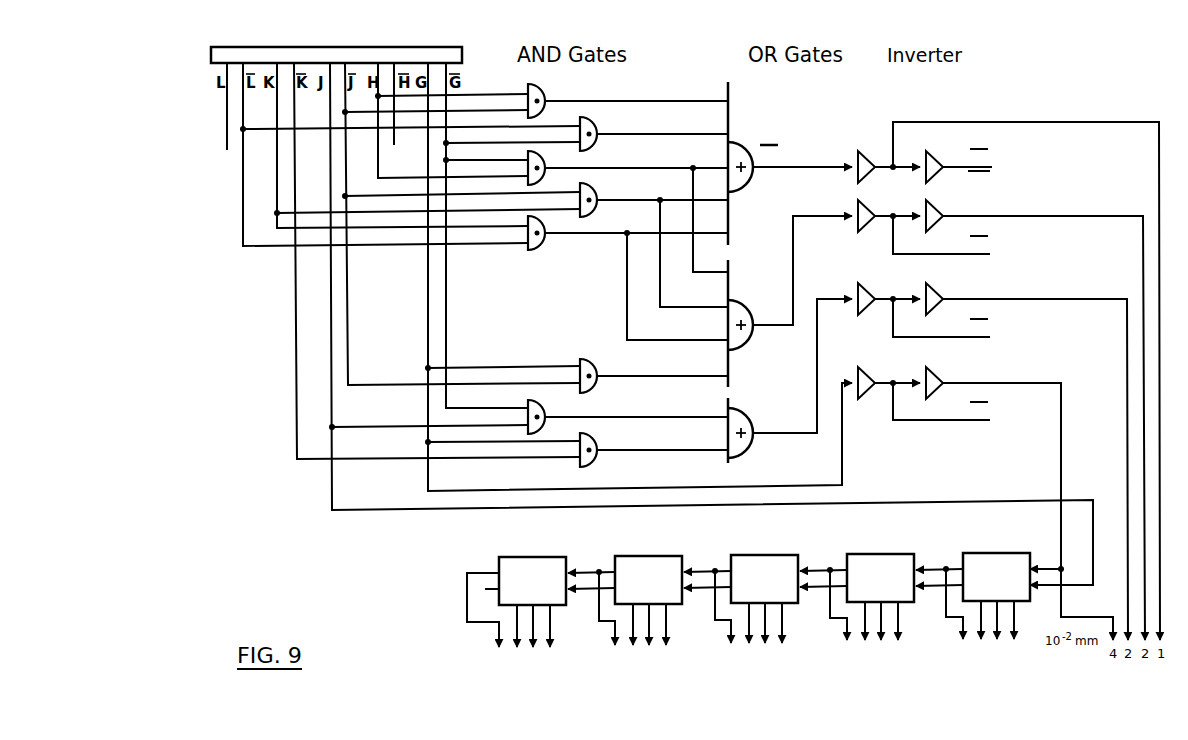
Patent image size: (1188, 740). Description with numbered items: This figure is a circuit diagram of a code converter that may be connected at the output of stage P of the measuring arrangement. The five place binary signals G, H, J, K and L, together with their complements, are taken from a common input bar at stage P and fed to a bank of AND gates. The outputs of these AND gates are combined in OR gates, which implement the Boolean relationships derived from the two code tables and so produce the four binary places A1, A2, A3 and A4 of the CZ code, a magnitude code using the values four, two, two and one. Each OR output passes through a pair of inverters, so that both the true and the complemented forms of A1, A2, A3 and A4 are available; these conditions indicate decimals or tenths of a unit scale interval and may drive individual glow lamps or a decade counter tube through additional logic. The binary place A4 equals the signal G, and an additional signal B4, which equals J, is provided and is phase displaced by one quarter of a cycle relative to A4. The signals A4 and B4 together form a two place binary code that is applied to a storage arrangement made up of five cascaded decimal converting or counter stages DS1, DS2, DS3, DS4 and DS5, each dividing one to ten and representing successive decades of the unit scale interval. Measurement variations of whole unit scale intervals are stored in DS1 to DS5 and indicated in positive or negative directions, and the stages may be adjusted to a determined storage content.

The stage P is at (462, 52).
The binary place A1 is at (956, 370).
The binary place A2 is at (949, 417).
The binary place A3 is at (940, 459).
The binary signal A4 is at (938, 501).
The signal B4 is at (983, 491).
The decimal converting or counter stage DS1 is at (988, 596).
The decimal converting or counter stage DS2 is at (857, 597).
The decimal converting or counter stage DS3 is at (741, 599).
The decimal converting or counter stage DS4 is at (625, 600).
The decimal converting or counter stage DS5 is at (516, 601).